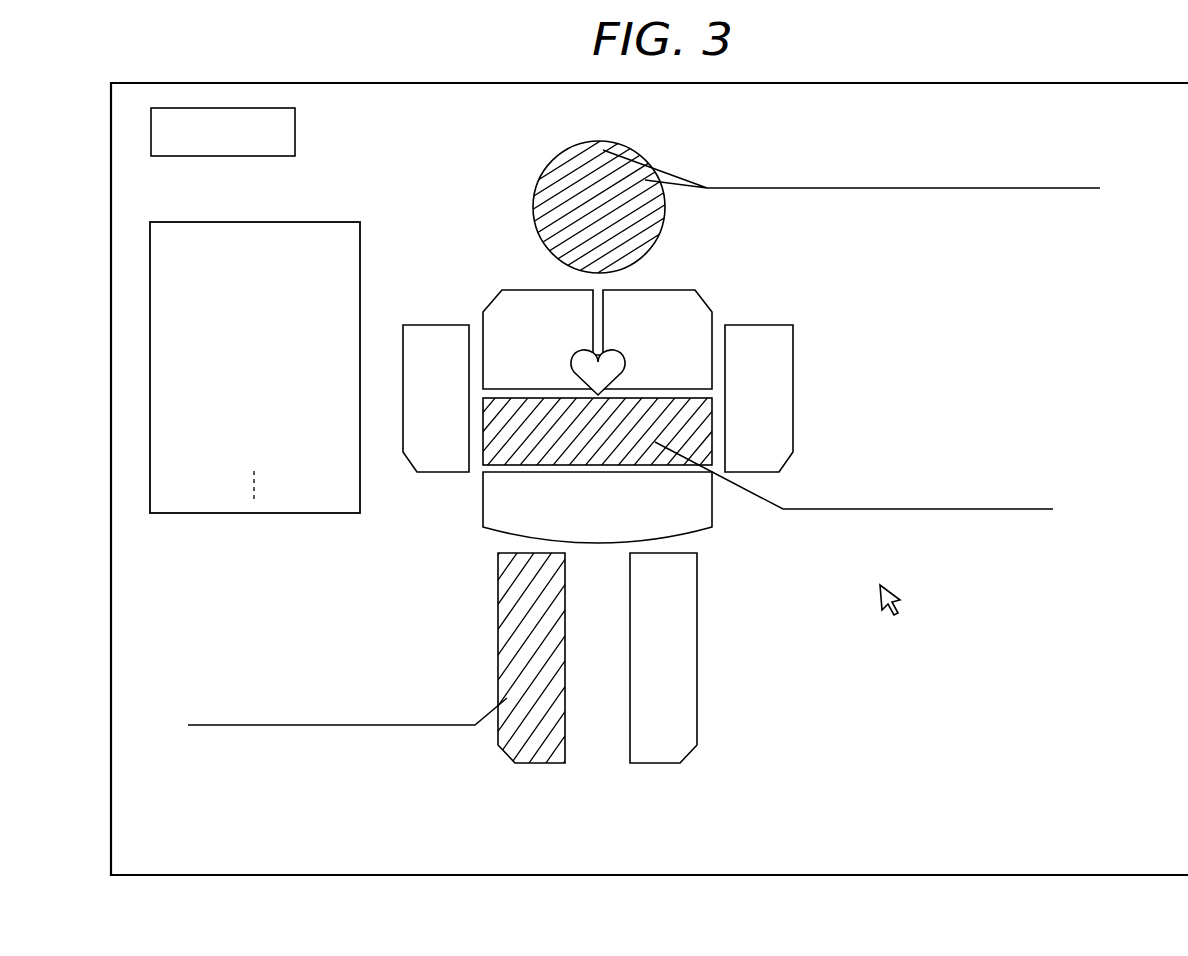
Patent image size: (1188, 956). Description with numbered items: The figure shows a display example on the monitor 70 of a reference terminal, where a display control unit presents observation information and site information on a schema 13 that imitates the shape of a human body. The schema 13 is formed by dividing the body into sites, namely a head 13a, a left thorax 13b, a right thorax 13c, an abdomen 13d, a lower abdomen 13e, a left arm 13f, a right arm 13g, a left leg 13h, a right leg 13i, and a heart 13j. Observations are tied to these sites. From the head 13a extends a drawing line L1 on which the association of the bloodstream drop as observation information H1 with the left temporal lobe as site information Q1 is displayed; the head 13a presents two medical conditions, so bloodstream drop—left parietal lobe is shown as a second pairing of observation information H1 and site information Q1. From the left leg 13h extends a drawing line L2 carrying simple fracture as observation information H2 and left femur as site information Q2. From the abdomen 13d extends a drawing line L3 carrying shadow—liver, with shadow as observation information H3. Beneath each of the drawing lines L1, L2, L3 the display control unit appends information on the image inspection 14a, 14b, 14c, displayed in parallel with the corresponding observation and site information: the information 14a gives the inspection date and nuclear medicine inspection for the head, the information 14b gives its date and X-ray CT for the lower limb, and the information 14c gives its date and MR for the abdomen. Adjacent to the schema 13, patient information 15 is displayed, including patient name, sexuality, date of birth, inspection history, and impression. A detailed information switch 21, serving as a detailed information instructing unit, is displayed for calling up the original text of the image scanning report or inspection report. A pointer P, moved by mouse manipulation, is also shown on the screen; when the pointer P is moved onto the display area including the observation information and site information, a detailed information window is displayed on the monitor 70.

The monitor 70 is at (1085, 83).
The detailed information switch 21 is at (297, 130).
The patient information 15 is at (310, 222).
The schema 13 is at (577, 478).
The head 13a is at (560, 157).
The left thorax 13b is at (530, 290).
The right thorax 13c is at (672, 290).
The abdomen 13d is at (508, 457).
The lower abdomen 13e is at (690, 520).
The left arm 13f is at (437, 325).
The right arm 13g is at (793, 345).
The left leg 13h is at (498, 625).
The right leg 13i is at (687, 617).
The heart 13j is at (617, 365).
The information on the image inspection 14a is at (851, 199).
The information on the image inspection 14b is at (347, 736).
The information on the image inspection 14c is at (854, 518).
The observation information H1 is at (792, 135).
The observation information H2 is at (271, 699).
The observation information H3 is at (852, 483).
The site information Q1 is at (980, 135).
The site information Q2 is at (414, 699).
The drawing line L1 is at (795, 190).
The drawing line L2 is at (208, 728).
The drawing line L3 is at (815, 512).
The pointer P is at (890, 617).